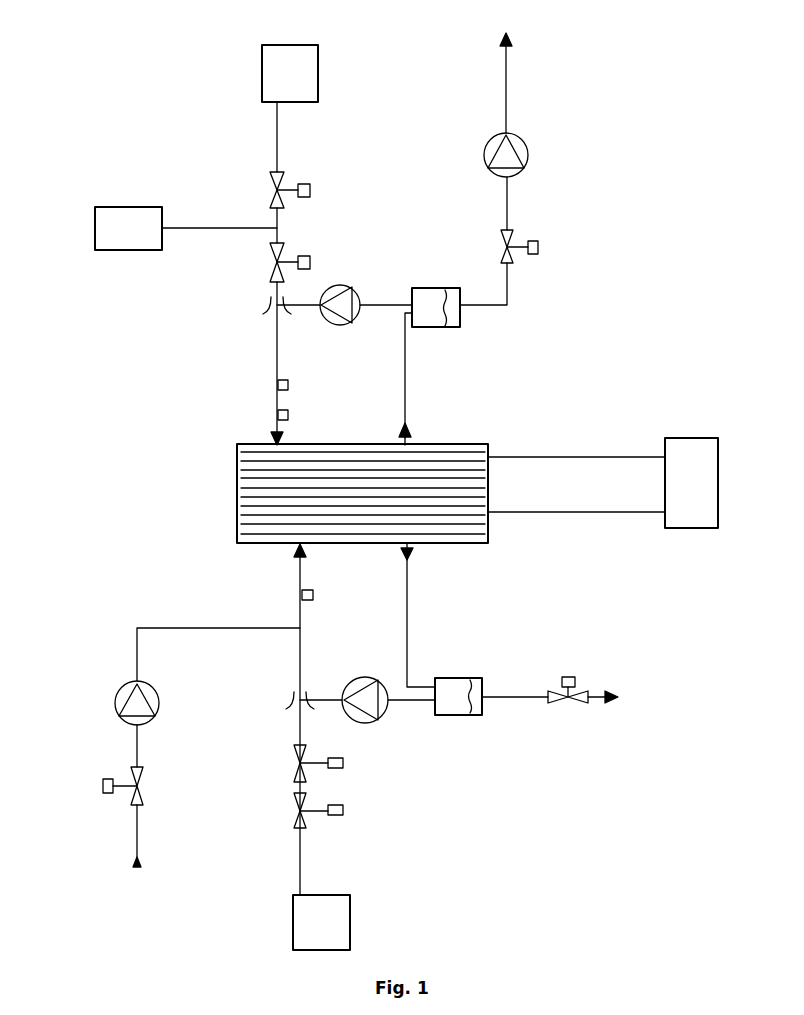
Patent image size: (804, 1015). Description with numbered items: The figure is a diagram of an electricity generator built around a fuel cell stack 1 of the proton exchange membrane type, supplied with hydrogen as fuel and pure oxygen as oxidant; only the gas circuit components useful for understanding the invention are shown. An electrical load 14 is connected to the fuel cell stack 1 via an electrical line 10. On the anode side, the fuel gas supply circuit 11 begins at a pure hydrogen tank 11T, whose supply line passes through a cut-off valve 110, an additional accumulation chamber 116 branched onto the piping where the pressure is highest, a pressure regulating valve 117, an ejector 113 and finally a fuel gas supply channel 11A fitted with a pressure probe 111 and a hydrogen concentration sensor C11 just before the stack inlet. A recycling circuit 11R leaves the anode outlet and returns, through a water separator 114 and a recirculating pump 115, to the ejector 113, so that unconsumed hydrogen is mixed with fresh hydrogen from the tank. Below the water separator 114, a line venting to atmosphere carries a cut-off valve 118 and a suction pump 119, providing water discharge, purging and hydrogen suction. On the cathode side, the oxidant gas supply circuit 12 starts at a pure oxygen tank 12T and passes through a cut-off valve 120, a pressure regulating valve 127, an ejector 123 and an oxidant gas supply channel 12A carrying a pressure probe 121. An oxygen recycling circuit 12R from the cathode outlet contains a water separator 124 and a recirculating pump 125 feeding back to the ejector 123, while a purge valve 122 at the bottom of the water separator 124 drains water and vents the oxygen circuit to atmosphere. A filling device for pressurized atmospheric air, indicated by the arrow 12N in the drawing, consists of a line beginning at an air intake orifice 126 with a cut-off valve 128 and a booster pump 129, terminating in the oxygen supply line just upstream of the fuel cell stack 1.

The fuel cell stack 1 is at (237, 493).
The electrical line 10 is at (610, 520).
The fuel gas supply circuit 11 is at (57, 261).
The pure hydrogen tank 11T is at (263, 72).
The fuel gas supply channel 11A is at (275, 365).
The hydrogen recycling circuit 11R is at (382, 303).
The cut-off valve 110 is at (273, 190).
The pressure probe 111 is at (278, 385).
The hydrogen concentration sensor C11 is at (278, 415).
The ejector 113 is at (267, 313).
The water separator 114 is at (433, 288).
The recirculating pump 115 is at (333, 290).
The additional accumulation chamber 116 is at (127, 207).
The pressure regulating valve 117 is at (273, 262).
The cut-off valve 118 is at (512, 250).
The suction pump 119 is at (492, 150).
The electrical load 14 is at (692, 458).
The oxidant gas supply circuit 12 is at (60, 773).
The pure oxygen tank 12T is at (293, 920).
The oxidant gas supply channel 12A is at (298, 622).
The oxygen recycling circuit 12R is at (403, 700).
The nitrogen supply branch 12N is at (121, 591).
The cut-off valve 120 is at (297, 811).
The pressure probe 121 is at (302, 593).
The purge valve 122 is at (573, 700).
The ejector 123 is at (287, 700).
The water separator 124 is at (457, 715).
The recirculating pump 125 is at (358, 720).
The air intake orifice 126 is at (133, 862).
The pressure regulating valve 127 is at (297, 762).
The cut-off valve 128 is at (135, 785).
The booster pump 129 is at (127, 695).